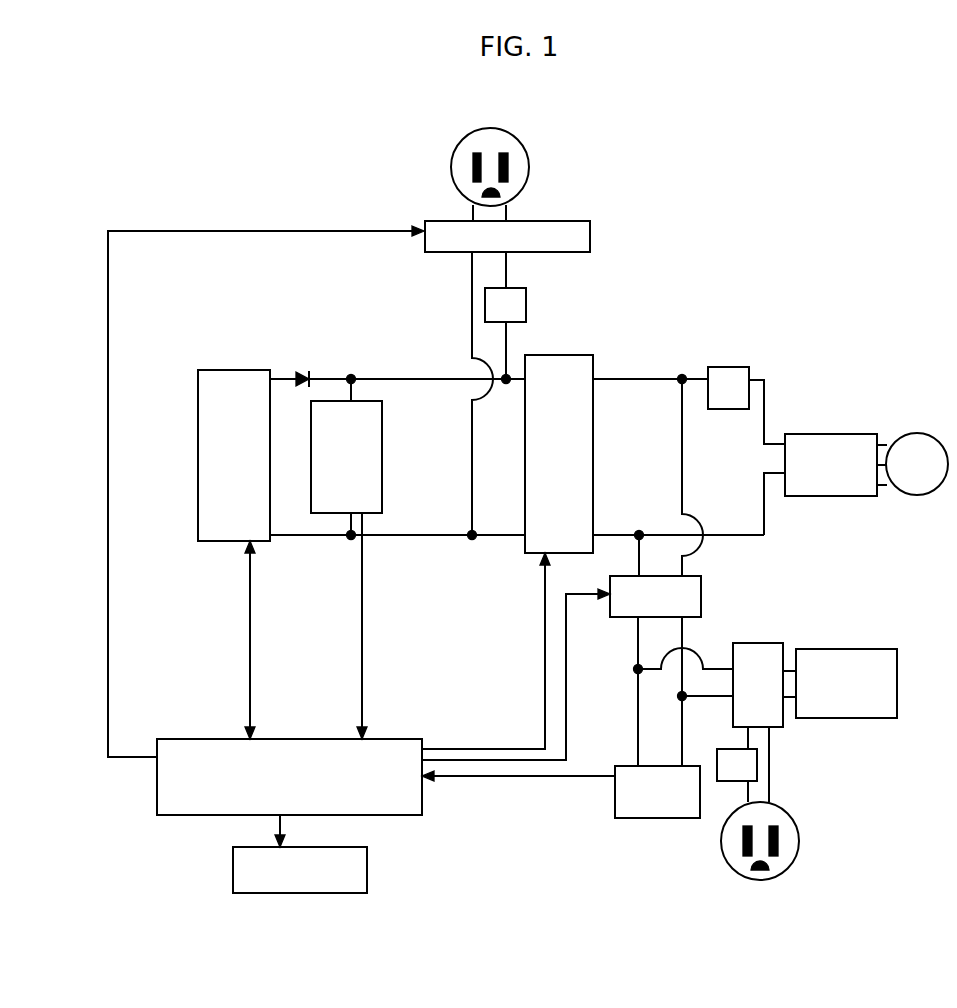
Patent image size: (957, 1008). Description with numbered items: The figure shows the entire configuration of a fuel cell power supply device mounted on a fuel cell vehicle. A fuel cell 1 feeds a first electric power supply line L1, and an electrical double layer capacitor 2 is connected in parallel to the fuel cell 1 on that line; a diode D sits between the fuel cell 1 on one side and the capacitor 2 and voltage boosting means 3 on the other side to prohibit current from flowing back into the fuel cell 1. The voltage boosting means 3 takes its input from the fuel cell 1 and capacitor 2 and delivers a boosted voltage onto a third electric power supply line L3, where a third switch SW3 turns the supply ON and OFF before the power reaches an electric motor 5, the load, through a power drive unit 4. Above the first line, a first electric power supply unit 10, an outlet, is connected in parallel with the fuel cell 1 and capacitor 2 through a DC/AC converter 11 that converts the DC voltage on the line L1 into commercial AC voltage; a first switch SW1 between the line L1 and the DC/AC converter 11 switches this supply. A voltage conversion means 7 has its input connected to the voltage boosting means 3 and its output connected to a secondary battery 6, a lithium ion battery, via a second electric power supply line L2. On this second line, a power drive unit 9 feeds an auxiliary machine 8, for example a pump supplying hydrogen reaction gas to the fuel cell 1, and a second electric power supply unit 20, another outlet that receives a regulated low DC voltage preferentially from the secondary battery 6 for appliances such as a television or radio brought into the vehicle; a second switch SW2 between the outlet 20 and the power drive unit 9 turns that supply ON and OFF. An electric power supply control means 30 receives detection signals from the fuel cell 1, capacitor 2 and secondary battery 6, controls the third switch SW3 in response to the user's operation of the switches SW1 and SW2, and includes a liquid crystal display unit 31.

The fuel cell 1 is at (216, 370).
The diode D is at (305, 372).
The first electric power supply line L1 is at (405, 379).
The electrical double layer capacitor 2 is at (382, 460).
The voltage boosting means 3 is at (593, 445).
The third electric power supply line L3 is at (657, 379).
The third switch SW3 is at (728, 367).
The power drive unit 4 is at (825, 434).
The electric motor 5 is at (915, 433).
The first electric power supply unit 10 is at (529, 167).
The DC/AC converter 11 is at (590, 237).
The first switch SW1 is at (526, 305).
The voltage conversion means 7 is at (701, 590).
The second electric power supply line L2 is at (682, 627).
The power drive unit 9 is at (775, 643).
The auxiliary machine 8 is at (847, 649).
The second switch SW2 is at (720, 749).
The second electric power supply unit 20 is at (799, 841).
The secondary battery 6 is at (622, 818).
The electric power supply control means 30 is at (405, 739).
The display unit 31 is at (367, 870).